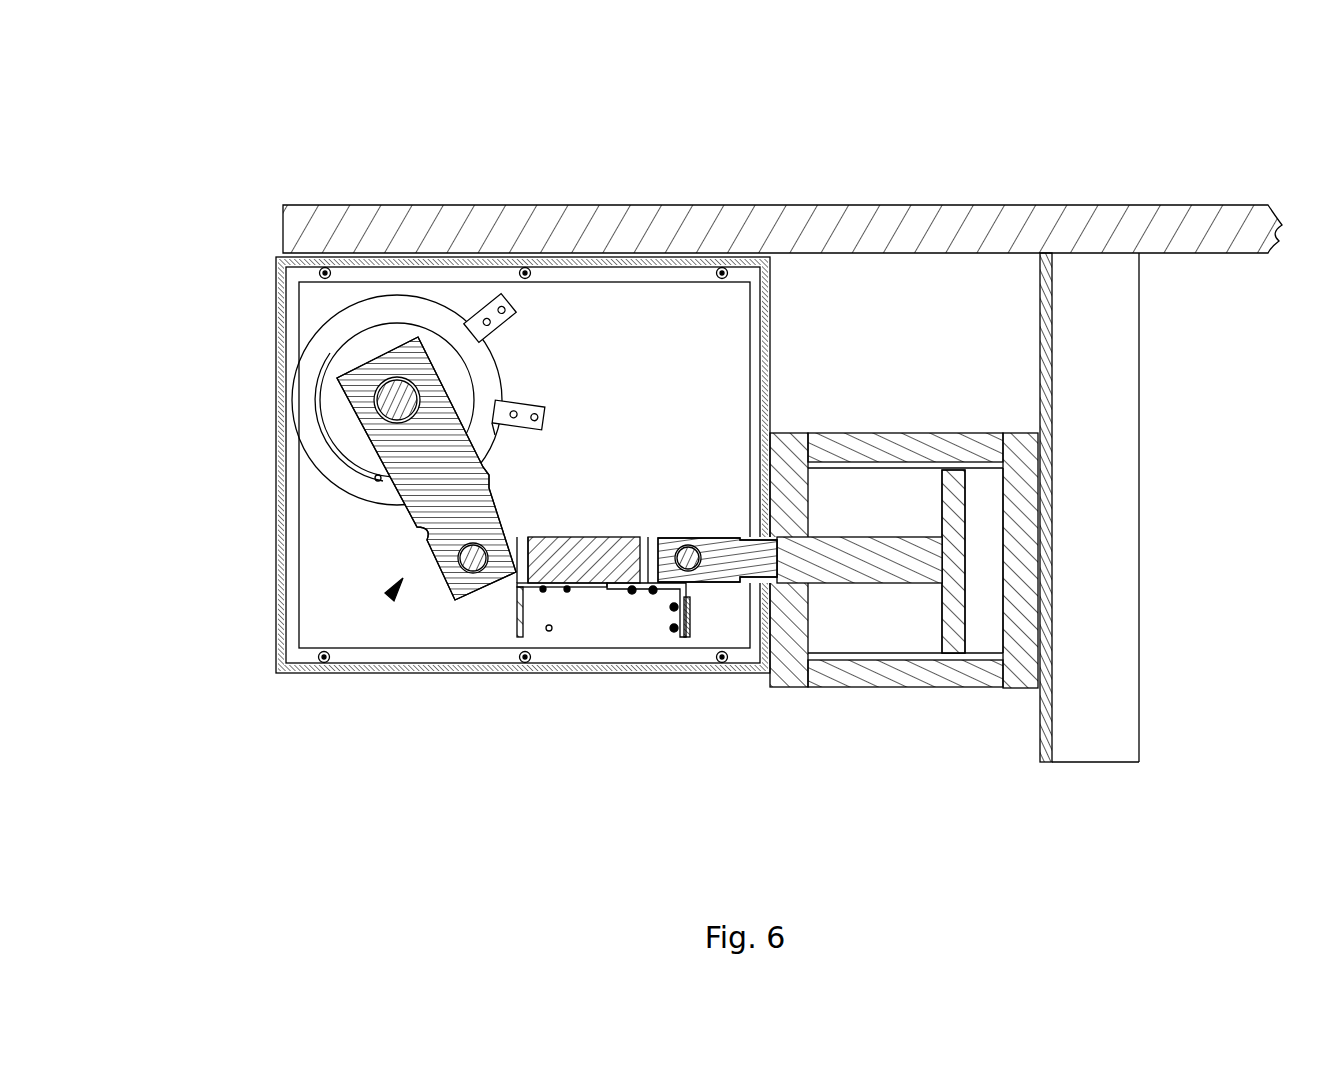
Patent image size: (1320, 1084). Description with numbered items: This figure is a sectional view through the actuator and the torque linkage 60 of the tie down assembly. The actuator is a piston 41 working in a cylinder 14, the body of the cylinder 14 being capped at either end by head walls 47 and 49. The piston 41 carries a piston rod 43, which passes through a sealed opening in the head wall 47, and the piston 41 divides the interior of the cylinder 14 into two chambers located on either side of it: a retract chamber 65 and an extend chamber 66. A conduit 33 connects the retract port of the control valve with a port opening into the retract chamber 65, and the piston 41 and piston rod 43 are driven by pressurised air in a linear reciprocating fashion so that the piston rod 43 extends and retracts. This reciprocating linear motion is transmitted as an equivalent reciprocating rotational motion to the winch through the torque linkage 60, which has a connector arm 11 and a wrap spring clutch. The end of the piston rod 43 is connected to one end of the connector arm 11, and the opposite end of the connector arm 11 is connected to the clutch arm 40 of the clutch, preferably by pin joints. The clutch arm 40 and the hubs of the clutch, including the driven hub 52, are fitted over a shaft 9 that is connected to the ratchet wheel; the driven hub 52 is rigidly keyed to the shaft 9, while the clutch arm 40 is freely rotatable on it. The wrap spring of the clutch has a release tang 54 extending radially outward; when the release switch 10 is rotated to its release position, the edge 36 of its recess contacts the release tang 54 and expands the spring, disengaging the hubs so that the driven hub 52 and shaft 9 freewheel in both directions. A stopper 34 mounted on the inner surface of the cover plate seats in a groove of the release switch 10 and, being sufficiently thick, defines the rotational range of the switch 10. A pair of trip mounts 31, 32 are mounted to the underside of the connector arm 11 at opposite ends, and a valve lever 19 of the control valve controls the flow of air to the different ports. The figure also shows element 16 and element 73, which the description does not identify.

The shaft 9 is at (400, 400).
The release switch 10 is at (373, 308).
The connector arm 11 is at (602, 562).
The cylinder 14 is at (860, 658).
The mounting wall 16 is at (1103, 440).
The valve lever 19 is at (548, 632).
The trip mount 31 is at (678, 632).
The trip mount 32 is at (518, 602).
The conduit 33 is at (521, 410).
The stopper 34 is at (492, 300).
The edge of recess 36 is at (328, 430).
The clutch arm 40 is at (442, 478).
The piston 41 is at (953, 600).
The piston rod 43 is at (727, 560).
The head wall 47 is at (787, 655).
The head wall 49 is at (1023, 545).
The driven hub 52 is at (338, 407).
The release tang 54 is at (377, 477).
The torque linkage 60 is at (398, 590).
The retract chamber 65 is at (905, 622).
The extend chamber 66 is at (985, 568).
The support slab 73 is at (793, 218).